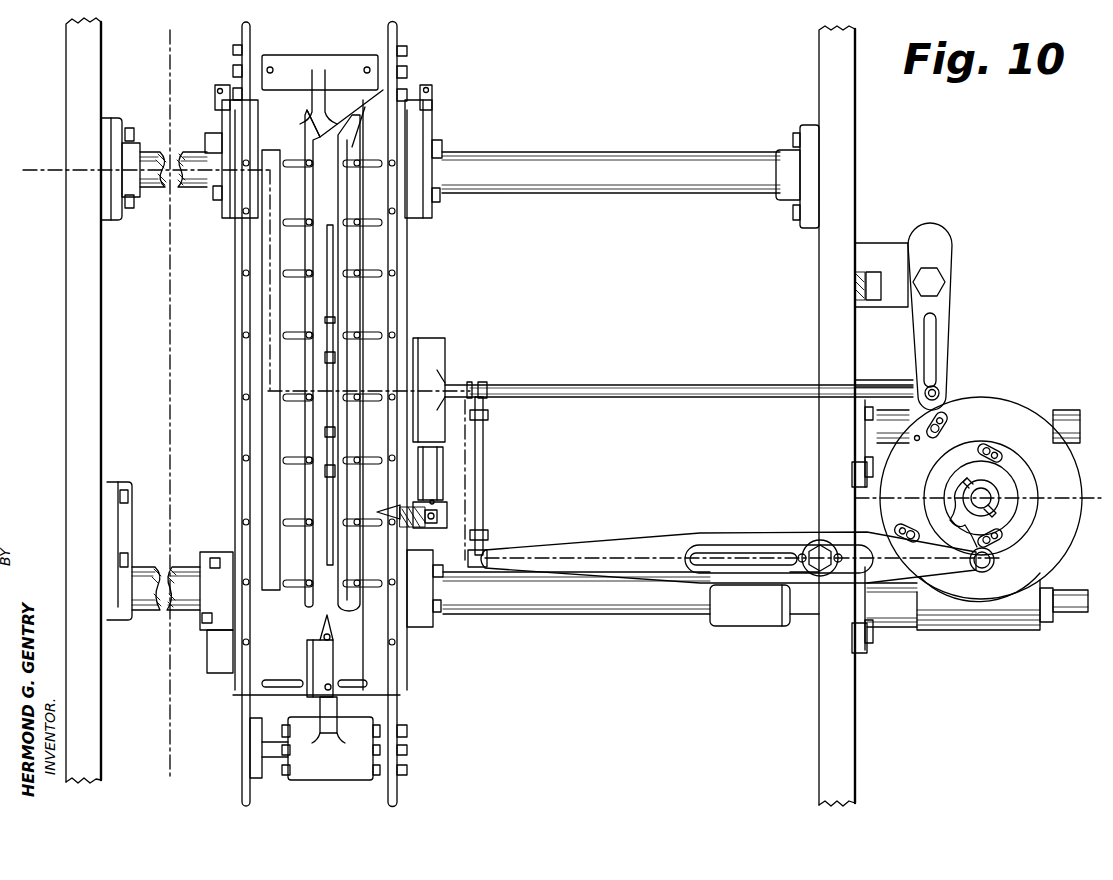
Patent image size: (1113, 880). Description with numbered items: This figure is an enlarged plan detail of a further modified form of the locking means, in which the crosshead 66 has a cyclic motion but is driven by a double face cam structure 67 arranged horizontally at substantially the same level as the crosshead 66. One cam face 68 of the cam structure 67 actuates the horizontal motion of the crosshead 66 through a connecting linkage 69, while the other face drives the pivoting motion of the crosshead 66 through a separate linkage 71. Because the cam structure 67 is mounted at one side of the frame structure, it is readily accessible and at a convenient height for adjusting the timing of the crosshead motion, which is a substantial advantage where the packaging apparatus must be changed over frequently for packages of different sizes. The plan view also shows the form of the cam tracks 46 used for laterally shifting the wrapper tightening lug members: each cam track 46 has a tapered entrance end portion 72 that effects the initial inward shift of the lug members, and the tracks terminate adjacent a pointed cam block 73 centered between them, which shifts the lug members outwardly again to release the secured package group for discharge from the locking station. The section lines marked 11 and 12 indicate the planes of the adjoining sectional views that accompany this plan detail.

The section line 11- 11 is at (192, 43).
The section line 12- 12 is at (25, 148).
The cam track 46 is at (305, 293).
The crosshead 66 is at (448, 352).
The double face cam structure 67 is at (997, 396).
The cam face 68 is at (980, 597).
The connecting linkage 69 is at (705, 533).
The linkage 71 is at (657, 384).
The tapered entrance end portion 72 is at (268, 126).
The pointed cam block 73 is at (338, 663).